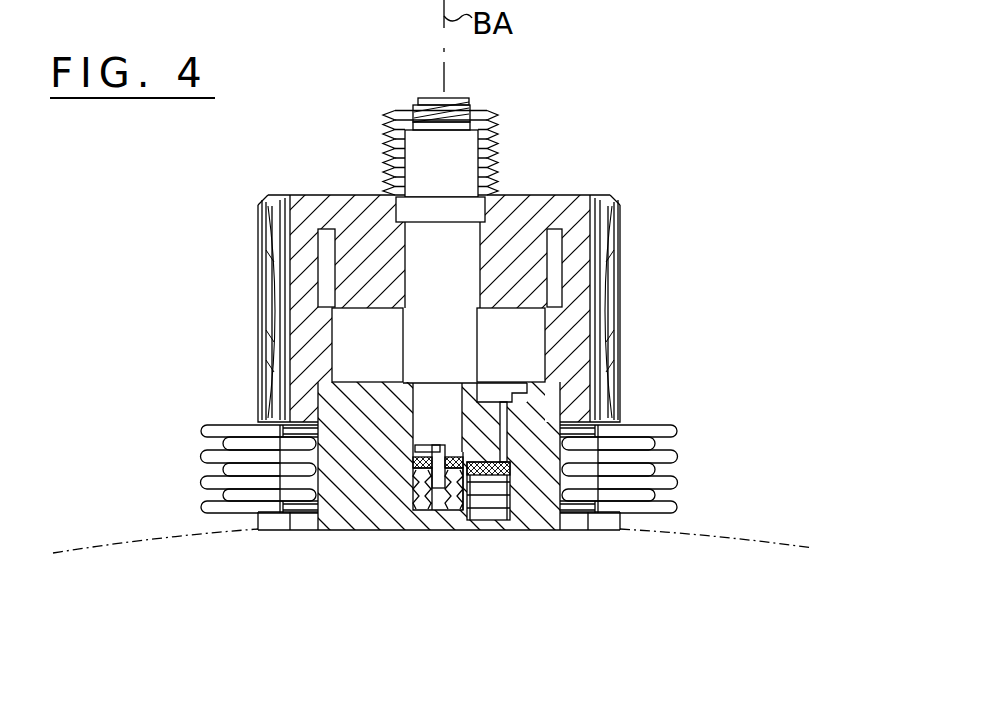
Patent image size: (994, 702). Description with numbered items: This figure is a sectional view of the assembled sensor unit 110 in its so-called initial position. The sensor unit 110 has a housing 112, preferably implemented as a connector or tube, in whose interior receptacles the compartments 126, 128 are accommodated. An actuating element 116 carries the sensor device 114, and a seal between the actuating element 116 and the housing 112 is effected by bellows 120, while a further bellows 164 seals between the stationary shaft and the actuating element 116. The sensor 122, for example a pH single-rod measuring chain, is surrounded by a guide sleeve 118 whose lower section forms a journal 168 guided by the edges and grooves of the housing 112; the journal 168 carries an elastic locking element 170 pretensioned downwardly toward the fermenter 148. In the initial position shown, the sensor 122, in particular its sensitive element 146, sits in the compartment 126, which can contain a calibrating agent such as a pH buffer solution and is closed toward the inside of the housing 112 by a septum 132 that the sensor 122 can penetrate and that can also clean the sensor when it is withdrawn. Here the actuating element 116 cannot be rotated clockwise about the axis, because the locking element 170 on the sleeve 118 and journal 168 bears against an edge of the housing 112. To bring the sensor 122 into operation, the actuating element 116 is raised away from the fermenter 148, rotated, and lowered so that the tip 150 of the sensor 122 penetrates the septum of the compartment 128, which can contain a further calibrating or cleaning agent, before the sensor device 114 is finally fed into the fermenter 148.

The sensor unit 110 is at (688, 132).
The housing 112 is at (370, 495).
The sensor device 114 is at (409, 164).
The actuating element 116 is at (613, 236).
The guide sleeve 118 is at (420, 266).
The bellows 120 is at (213, 458).
The sensor 122 is at (462, 455).
The compartment 126 is at (428, 513).
The compartment 128 is at (498, 510).
The septum 132 is at (427, 455).
The sensitive element 146 is at (441, 472).
The fermenter 148 is at (157, 535).
The tip 150 is at (441, 490).
The further bellows 164 is at (497, 140).
The journal 168 is at (433, 413).
The elastic locking element 170 is at (433, 452).